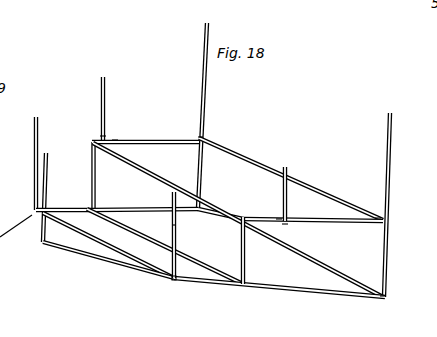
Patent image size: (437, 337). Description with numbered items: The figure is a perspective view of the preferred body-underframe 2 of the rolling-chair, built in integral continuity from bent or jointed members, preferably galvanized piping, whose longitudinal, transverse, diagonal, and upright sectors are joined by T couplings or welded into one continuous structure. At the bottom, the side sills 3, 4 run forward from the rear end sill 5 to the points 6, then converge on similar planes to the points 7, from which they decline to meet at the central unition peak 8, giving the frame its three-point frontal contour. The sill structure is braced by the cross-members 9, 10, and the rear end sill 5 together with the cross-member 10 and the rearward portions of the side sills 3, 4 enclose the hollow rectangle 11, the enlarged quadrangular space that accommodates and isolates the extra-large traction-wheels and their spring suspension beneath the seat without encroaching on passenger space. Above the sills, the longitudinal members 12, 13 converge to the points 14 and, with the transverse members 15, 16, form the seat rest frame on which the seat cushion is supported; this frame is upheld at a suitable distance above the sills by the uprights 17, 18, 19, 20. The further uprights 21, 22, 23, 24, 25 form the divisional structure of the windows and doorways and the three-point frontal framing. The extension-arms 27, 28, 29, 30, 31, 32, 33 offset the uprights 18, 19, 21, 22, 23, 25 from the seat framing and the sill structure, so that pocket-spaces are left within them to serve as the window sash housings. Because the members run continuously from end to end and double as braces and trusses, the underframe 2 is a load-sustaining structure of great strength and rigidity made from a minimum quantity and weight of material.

The underframe 2 is at (213, 177).
The side sill 3 is at (152, 207).
The side sill 4 is at (307, 291).
The rear end sill 5 is at (333, 269).
The points 6 is at (110, 207).
The points 7 is at (163, 274).
The central unition peak 8 is at (42, 245).
The cross-member 9 is at (100, 238).
The cross-member 10 is at (130, 230).
The hollow rectangle 11 is at (196, 232).
The longitudinal member 12 is at (152, 140).
The longitudinal member 13 is at (312, 222).
The points 14 is at (115, 140).
The transverse member 15 is at (152, 172).
The transverse member 16 is at (260, 163).
The upright 17 is at (89, 184).
The upright 18 is at (202, 100).
The upright 19 is at (387, 170).
The upright 20 is at (243, 250).
The upright 21 is at (107, 100).
The upright 22 is at (287, 192).
The upright 23 is at (35, 142).
The upright 24 is at (43, 172).
The upright 25 is at (173, 227).
The extension-arm 27 is at (102, 136).
The extension-arm 28 is at (200, 137).
The extension-arm 29 is at (213, 213).
The extension-arm 30 is at (377, 217).
The extension-arm 31 is at (379, 296).
The extension-arm 32 is at (284, 227).
The extension-arm 33 is at (172, 284).